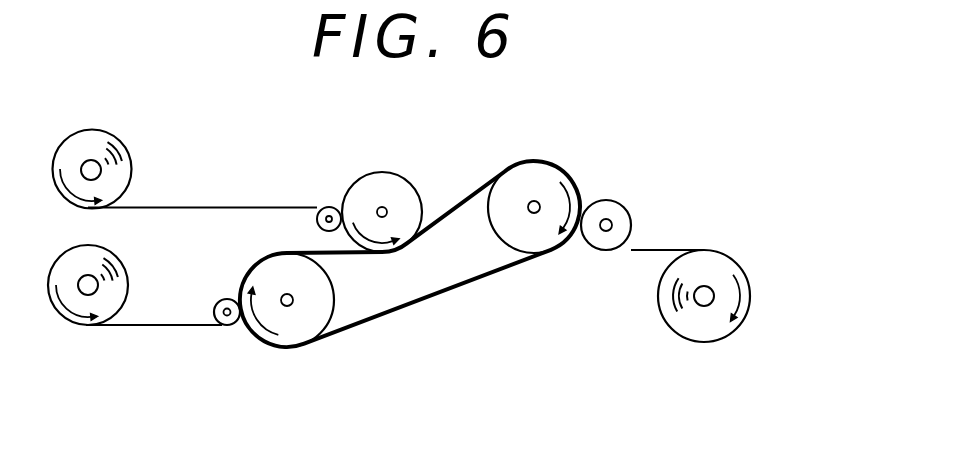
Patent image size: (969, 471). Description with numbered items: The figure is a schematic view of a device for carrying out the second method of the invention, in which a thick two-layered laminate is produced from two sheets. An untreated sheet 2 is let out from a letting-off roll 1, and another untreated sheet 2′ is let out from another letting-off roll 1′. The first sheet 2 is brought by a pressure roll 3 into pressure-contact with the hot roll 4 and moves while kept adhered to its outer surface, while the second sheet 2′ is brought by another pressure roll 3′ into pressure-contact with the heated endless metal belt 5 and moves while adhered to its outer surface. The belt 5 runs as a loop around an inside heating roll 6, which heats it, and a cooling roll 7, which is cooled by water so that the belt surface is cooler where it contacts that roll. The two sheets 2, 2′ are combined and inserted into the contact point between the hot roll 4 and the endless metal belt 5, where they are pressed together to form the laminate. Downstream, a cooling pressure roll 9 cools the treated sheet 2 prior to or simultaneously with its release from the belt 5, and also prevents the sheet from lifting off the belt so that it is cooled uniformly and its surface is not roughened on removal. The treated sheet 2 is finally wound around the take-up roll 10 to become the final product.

The letting-off roll 1 is at (128, 152).
The letting-off roll 1′ is at (165, 238).
The untreated sheet 2 is at (242, 207).
The untreated sheet 2′ is at (176, 285).
The pressure roll 3 is at (316, 224).
The pressure roll 3′ is at (222, 300).
The hot roll 4 is at (382, 212).
The endless metal belt 5 is at (493, 272).
The inside heating roll 6 is at (287, 300).
The cooling roll 7 is at (534, 207).
The cooling pressure roll 9 is at (621, 206).
The take-up roll 10 is at (723, 256).